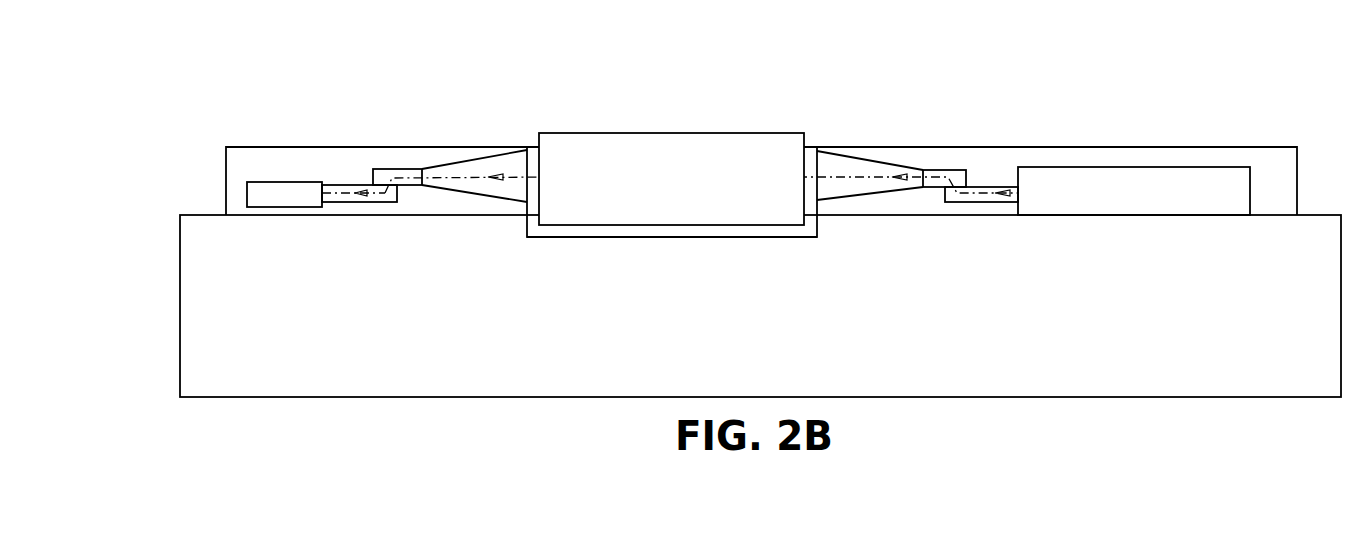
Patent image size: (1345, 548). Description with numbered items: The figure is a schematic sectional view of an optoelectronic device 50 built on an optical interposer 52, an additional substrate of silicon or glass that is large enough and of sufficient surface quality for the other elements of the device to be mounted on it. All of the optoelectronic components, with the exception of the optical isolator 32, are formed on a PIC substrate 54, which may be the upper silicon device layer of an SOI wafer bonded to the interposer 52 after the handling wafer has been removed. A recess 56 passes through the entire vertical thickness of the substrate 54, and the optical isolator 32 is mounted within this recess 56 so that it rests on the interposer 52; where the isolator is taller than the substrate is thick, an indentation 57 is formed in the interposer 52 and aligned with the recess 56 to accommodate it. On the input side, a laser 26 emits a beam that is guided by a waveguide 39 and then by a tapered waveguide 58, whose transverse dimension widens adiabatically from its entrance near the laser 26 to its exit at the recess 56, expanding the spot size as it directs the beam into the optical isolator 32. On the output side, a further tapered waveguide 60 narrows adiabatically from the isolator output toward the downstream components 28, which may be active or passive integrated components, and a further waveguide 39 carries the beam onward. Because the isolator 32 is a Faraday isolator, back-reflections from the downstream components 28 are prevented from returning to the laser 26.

The optoelectronic device 50 is at (212, 98).
The laser 26 is at (292, 166).
The downstream components 28 is at (1155, 167).
The optical isolator 32 is at (692, 133).
The waveguide 39 is at (338, 202).
The optical interposer 52 is at (180, 273).
The PIC substrate 54 is at (408, 147).
The recess 56 is at (812, 152).
The indentation 57 is at (643, 237).
The tapered waveguide 58 is at (487, 160).
The further tapered waveguide 60 is at (880, 160).